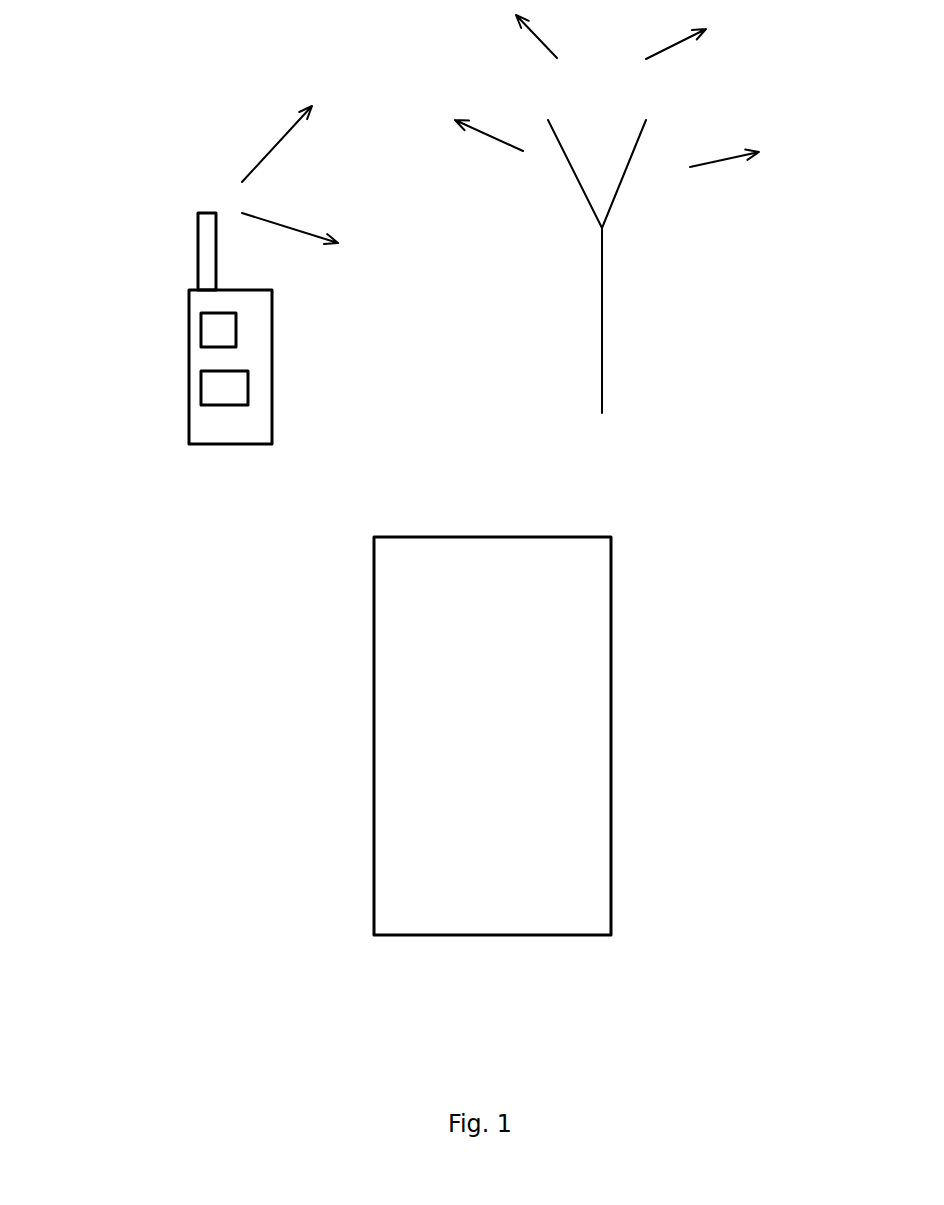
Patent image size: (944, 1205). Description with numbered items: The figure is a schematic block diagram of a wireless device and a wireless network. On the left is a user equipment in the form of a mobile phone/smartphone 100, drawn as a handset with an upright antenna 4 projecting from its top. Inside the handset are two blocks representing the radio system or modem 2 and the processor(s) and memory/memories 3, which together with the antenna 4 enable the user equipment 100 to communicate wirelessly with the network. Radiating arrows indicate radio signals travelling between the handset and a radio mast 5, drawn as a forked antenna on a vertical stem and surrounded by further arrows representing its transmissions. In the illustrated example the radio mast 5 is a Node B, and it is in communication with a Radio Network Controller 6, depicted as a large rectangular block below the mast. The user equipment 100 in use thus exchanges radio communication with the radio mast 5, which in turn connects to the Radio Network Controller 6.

The mobile phone/smartphone 100 is at (189, 342).
The antenna 4 is at (197, 233).
The radio system or modem 2 is at (237, 322).
The processor(s) and memory/memories 3 is at (197, 392).
The radio mast 5 is at (603, 269).
The Radio Network Controller 6 is at (611, 768).